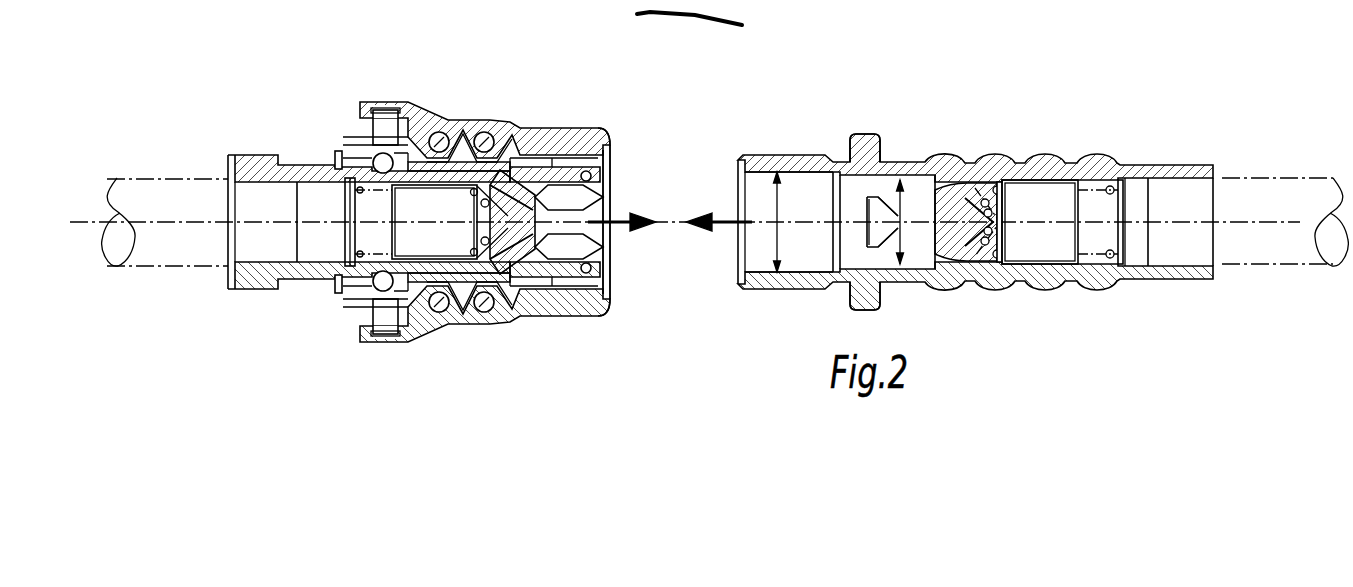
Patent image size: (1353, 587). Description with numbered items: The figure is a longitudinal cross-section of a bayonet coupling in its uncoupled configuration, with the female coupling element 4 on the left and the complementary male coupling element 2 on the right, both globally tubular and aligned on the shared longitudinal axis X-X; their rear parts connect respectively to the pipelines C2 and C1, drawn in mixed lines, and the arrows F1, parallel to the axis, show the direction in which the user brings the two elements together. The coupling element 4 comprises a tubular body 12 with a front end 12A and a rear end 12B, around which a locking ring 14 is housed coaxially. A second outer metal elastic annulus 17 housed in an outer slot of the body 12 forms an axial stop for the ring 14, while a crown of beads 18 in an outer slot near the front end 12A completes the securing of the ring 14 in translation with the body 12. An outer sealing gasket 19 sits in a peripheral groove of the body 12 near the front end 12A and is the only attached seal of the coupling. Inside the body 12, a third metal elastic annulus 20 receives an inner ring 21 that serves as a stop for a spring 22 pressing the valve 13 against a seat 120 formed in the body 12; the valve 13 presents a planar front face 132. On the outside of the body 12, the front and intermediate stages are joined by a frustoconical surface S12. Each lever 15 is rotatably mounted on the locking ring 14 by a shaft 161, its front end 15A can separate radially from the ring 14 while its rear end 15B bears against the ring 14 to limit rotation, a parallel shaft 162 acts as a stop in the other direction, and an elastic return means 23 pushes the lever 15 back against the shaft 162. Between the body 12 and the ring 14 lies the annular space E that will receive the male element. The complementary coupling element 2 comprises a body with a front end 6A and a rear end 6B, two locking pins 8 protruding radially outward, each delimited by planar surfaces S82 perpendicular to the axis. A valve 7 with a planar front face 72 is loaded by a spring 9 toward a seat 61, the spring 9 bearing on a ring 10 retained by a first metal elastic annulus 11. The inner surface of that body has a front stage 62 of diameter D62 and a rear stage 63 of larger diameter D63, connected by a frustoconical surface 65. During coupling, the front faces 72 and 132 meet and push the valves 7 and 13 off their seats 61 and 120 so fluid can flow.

The complementary coupling element 2 is at (768, 110).
The coupling element 4 is at (562, 79).
The front end of the body 6A is at (738, 160).
The rear end of the body 6B is at (1214, 170).
The valve 7 is at (908, 228).
The locking pin 8 is at (868, 137).
The spring 9 is at (1000, 268).
The ring 10 is at (1120, 268).
The first metal elastic annulus 11 is at (1122, 268).
The body 12 is at (292, 165).
The front end of the body 12A is at (605, 262).
The rear end of the body 12B is at (228, 168).
The valve 13 is at (607, 165).
The locking ring 14 is at (493, 290).
The lever 15 is at (447, 122).
The front end of the lever 15A is at (600, 134).
The rear end of the lever 15B is at (364, 104).
The second outer metal elastic annulus 17 is at (338, 150).
The bead 18 is at (374, 286).
The outer sealing gasket 19 is at (591, 174).
The third metal elastic annulus 20 is at (374, 158).
The inner ring 21 is at (348, 256).
The spring 22 is at (355, 252).
The elastic return means 23 is at (362, 340).
The seat 61 is at (998, 220).
The front stage 62 is at (815, 178).
The rear stage 63 is at (940, 256).
The frustoconical surface 65 is at (834, 258).
The planar front face of the valve 72 is at (856, 233).
The seat 120 is at (511, 231).
The planar front face of the valve 132 is at (614, 243).
The shaft 161 is at (442, 303).
The shaft 162 is at (485, 303).
The annular space E is at (588, 284).
The frustoconical surface S12 is at (511, 160).
The planar surface S82 is at (850, 148).
The arrows F1 is at (670, 209).
The inner diameter of the front stage D62 is at (766, 222).
The inner diameter of the rear stage D63 is at (891, 222).
The longitudinal axis X is at (677, 222).
The pipeline C1 is at (1272, 264).
The pipeline C2 is at (172, 266).